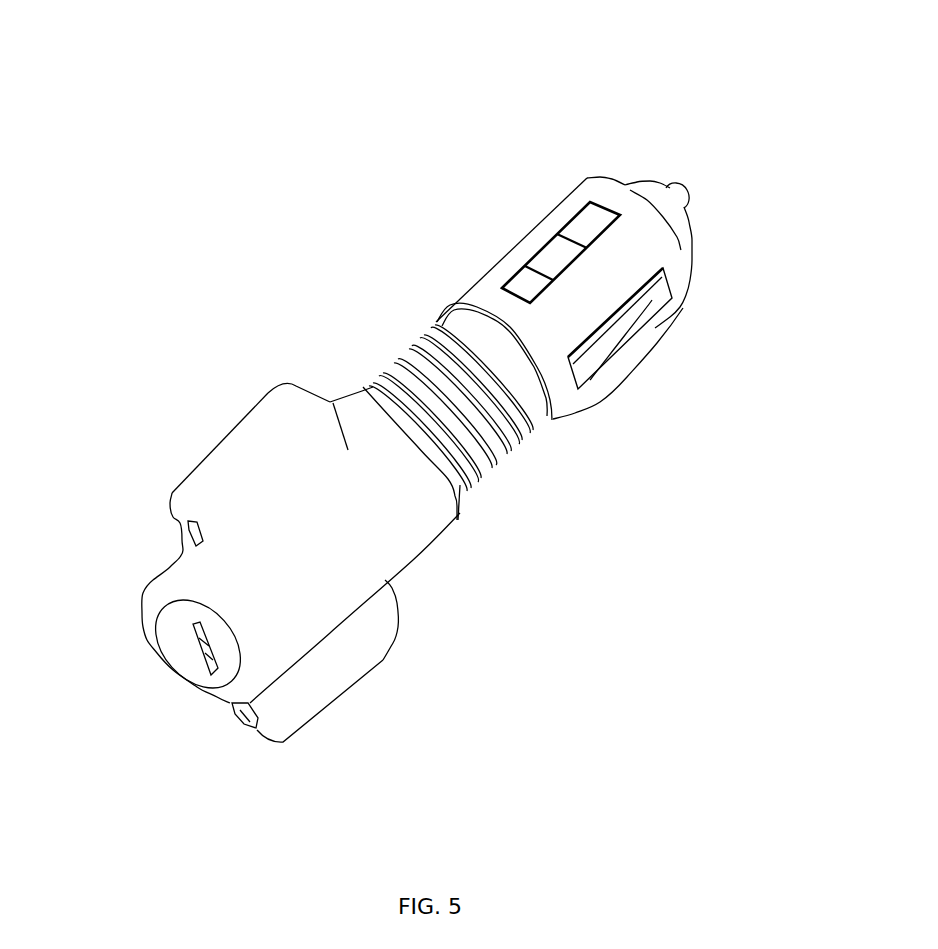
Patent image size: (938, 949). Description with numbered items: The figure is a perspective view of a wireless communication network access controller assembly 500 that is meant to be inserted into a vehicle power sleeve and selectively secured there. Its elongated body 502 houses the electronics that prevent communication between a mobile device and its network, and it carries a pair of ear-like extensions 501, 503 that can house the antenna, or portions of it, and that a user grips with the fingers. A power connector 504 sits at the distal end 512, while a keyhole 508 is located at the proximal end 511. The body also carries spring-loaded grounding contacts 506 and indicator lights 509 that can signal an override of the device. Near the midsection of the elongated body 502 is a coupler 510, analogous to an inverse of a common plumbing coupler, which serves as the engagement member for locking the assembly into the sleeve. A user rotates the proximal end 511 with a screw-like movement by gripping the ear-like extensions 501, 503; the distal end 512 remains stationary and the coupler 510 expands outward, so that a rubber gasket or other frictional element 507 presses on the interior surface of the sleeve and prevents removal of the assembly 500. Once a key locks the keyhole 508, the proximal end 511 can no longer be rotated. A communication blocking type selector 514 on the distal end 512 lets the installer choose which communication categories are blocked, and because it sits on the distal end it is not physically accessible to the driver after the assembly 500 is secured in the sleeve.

The wireless communication network access controller assembly 500 is at (372, 283).
The ear-like extension 501 is at (260, 433).
The elongated body 502 is at (415, 530).
The ear-like extension 503 is at (365, 635).
The power connector 504 is at (693, 183).
The spring-loaded grounding contact 506 is at (627, 330).
The rubber gasket or other frictional element 507 is at (407, 358).
The keyhole 508 is at (207, 677).
The indicator light 509 is at (180, 527).
The coupler 510 is at (498, 413).
The proximal end 511 is at (145, 467).
The distal end 512 is at (557, 172).
The communication blocking type selector 514 is at (547, 267).